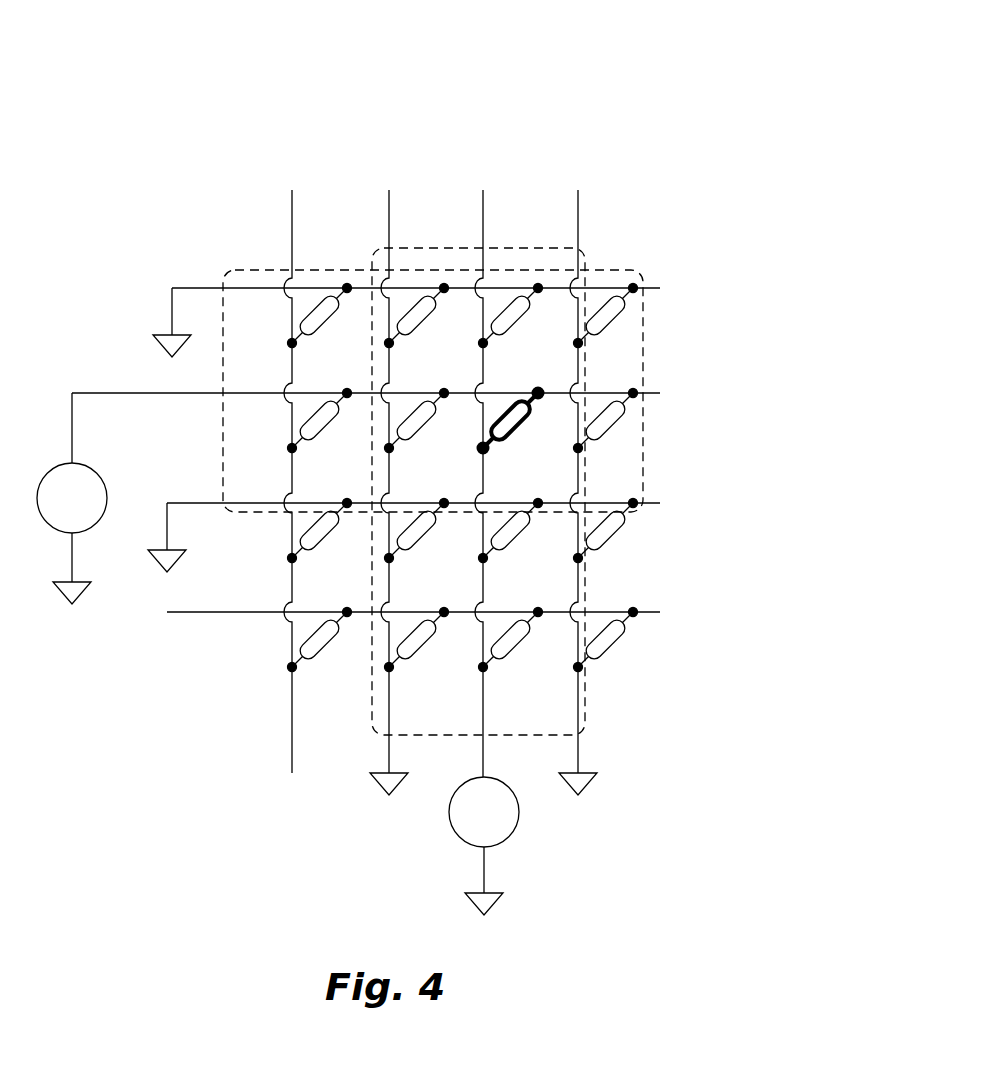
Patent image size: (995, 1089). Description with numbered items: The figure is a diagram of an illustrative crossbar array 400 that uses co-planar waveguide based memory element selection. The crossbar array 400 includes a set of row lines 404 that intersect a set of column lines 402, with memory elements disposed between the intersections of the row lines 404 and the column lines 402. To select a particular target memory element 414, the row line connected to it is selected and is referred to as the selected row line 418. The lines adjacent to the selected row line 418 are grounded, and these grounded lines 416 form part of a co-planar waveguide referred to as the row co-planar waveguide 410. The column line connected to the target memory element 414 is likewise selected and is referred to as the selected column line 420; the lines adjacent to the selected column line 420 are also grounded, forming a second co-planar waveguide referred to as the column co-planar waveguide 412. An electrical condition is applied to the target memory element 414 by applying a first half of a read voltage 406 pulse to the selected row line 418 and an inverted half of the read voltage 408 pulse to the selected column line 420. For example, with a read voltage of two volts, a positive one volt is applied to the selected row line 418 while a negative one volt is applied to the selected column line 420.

The crossbar array 400 is at (158, 121).
The column lines 402 is at (292, 187).
The row lines 404 is at (660, 612).
The read voltage 406 is at (50, 471).
The inverted read voltage 408 is at (520, 826).
The row co-planar waveguide 410 is at (630, 270).
The column co-planar waveguide 412 is at (585, 700).
The target memory element 414 is at (512, 405).
The grounded lines 416 is at (205, 288).
The selected row line 418 is at (148, 393).
The selected column line 420 is at (483, 753).